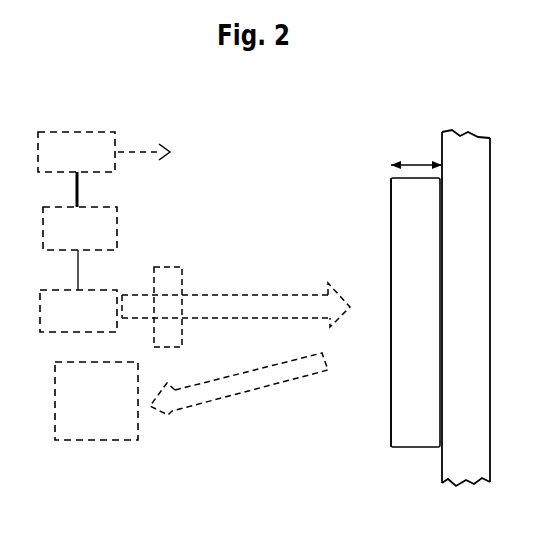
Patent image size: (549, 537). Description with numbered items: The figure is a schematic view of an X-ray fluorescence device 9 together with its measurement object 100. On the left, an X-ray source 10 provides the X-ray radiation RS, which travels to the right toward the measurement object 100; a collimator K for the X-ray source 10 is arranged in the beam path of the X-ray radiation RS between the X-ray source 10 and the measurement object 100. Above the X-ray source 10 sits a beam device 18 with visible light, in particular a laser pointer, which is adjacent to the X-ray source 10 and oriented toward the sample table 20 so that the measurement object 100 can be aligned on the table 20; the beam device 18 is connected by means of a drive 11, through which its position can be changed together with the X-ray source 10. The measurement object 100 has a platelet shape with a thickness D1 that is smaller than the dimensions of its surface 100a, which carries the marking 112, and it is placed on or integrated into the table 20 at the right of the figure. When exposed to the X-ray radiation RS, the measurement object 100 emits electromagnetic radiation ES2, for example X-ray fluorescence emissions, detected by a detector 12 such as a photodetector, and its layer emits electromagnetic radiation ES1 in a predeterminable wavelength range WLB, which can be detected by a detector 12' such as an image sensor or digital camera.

The X-ray fluorescence device 9 is at (212, 130).
The beam device 18 is at (76, 169).
The drive 11 is at (69, 239).
The X-ray source 10 is at (67, 321).
The detector 12 is at (96, 401).
The detector 12' is at (96, 401).
The collimator K is at (172, 266).
The X-ray radiation RS is at (236, 297).
The electromagnetic radiation ES1 is at (239, 397).
The electromagnetic radiation ES2 is at (250, 382).
The wavelength range WLB is at (250, 382).
The measurement object 100 is at (323, 163).
The surface 100a is at (372, 254).
The marking 112 is at (340, 312).
The thickness D1 is at (418, 161).
The table 20 is at (473, 428).